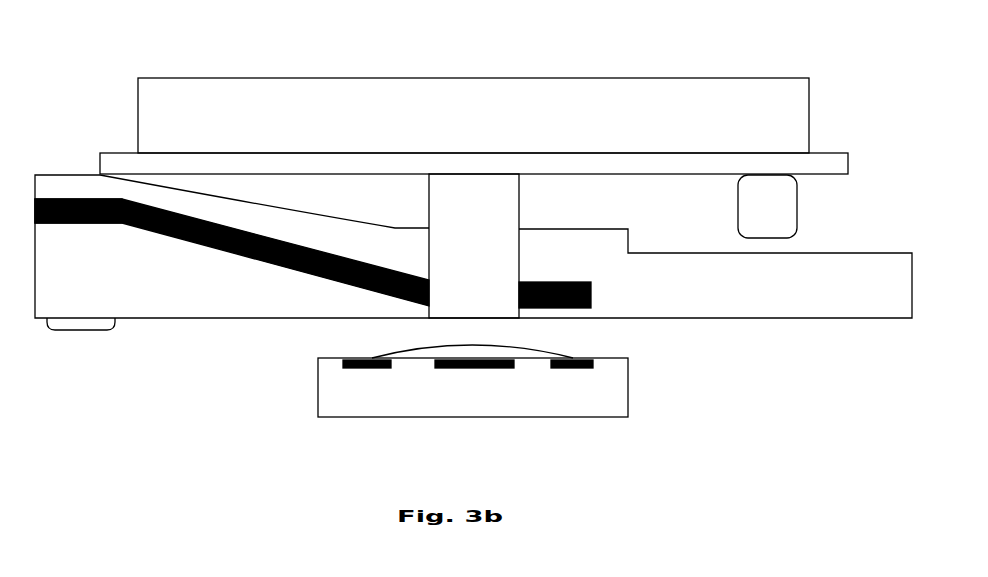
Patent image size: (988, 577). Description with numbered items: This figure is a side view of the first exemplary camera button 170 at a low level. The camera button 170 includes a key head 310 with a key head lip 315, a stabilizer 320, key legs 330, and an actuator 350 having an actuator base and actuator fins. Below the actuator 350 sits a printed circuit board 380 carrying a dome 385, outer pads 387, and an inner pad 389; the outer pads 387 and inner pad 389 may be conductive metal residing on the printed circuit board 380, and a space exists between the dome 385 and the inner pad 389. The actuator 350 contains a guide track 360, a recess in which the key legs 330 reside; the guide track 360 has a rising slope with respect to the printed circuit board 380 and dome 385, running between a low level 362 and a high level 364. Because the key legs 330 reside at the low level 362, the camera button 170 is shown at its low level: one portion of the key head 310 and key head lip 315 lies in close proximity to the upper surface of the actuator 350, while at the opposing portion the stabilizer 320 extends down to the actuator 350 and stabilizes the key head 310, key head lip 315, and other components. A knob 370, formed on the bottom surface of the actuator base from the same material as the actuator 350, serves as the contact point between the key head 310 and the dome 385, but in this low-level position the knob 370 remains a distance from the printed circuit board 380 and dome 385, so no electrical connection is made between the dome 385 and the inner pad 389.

The camera button 170 is at (236, 47).
The key head 310 is at (809, 115).
The key head lip 315 is at (848, 158).
The stabilizer 320 is at (797, 212).
The key legs 330 is at (519, 202).
The actuator 350 is at (37, 175).
The guide track 360 is at (232, 255).
The level 362 is at (567, 282).
The level 364 is at (78, 199).
The knob 370 is at (78, 333).
The printed circuit board 380 is at (628, 365).
The dome 385 is at (545, 352).
The outer pads 387 is at (360, 368).
The inner pad 389 is at (480, 368).